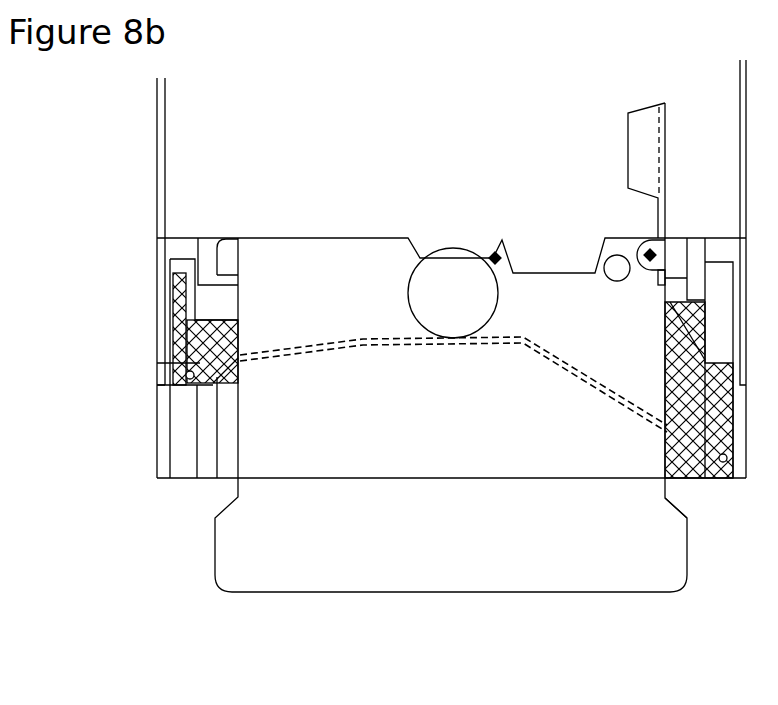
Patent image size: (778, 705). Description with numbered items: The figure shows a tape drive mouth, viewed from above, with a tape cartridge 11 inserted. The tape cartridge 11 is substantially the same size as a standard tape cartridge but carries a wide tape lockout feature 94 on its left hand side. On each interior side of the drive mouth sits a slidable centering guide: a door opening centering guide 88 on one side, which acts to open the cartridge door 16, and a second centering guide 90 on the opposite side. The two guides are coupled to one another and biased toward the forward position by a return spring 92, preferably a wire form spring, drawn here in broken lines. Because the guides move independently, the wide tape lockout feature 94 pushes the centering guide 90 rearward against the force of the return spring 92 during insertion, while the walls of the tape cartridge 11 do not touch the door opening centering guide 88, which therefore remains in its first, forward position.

The cartridge door 16 is at (668, 120).
The centering guide 90 is at (178, 386).
The wide tape lockout feature 94 is at (220, 378).
The return spring 92 is at (497, 347).
The door opening centering guide 88 is at (708, 478).
The tape cartridge 11 is at (625, 592).